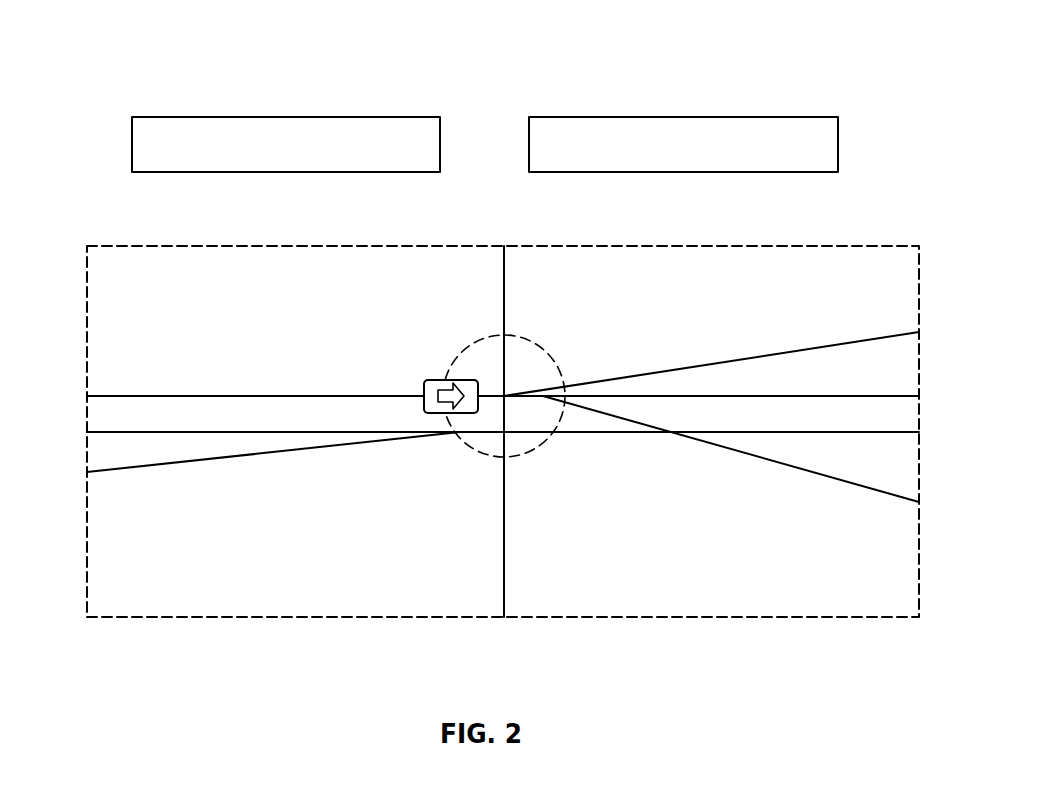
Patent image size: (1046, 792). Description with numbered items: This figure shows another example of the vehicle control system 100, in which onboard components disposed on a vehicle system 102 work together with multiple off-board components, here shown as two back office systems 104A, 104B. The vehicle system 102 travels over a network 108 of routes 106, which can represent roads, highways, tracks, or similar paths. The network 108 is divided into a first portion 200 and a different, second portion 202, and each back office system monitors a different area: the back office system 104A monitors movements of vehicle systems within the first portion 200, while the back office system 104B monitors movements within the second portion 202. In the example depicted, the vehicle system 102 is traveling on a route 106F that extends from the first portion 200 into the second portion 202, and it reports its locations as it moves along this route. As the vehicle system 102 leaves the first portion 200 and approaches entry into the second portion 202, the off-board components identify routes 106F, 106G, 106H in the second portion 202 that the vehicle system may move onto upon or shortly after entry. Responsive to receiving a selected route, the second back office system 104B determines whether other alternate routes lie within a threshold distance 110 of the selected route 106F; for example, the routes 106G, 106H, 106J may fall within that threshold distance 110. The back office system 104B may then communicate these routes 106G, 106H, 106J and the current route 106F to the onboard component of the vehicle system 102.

The vehicle control system 100 is at (170, 93).
The vehicle system 102 is at (440, 378).
The back office system 104A is at (337, 173).
The back office system 104B is at (734, 173).
The routes 106 is at (173, 393).
The route 106F is at (357, 395).
The route 106G is at (800, 349).
The route 106H is at (813, 431).
The route 106J is at (853, 482).
The network of routes 108 is at (85, 246).
The threshold distance 110 is at (475, 342).
The first portion of the route network 200 is at (504, 627).
The second portion of the route network 202 is at (921, 627).